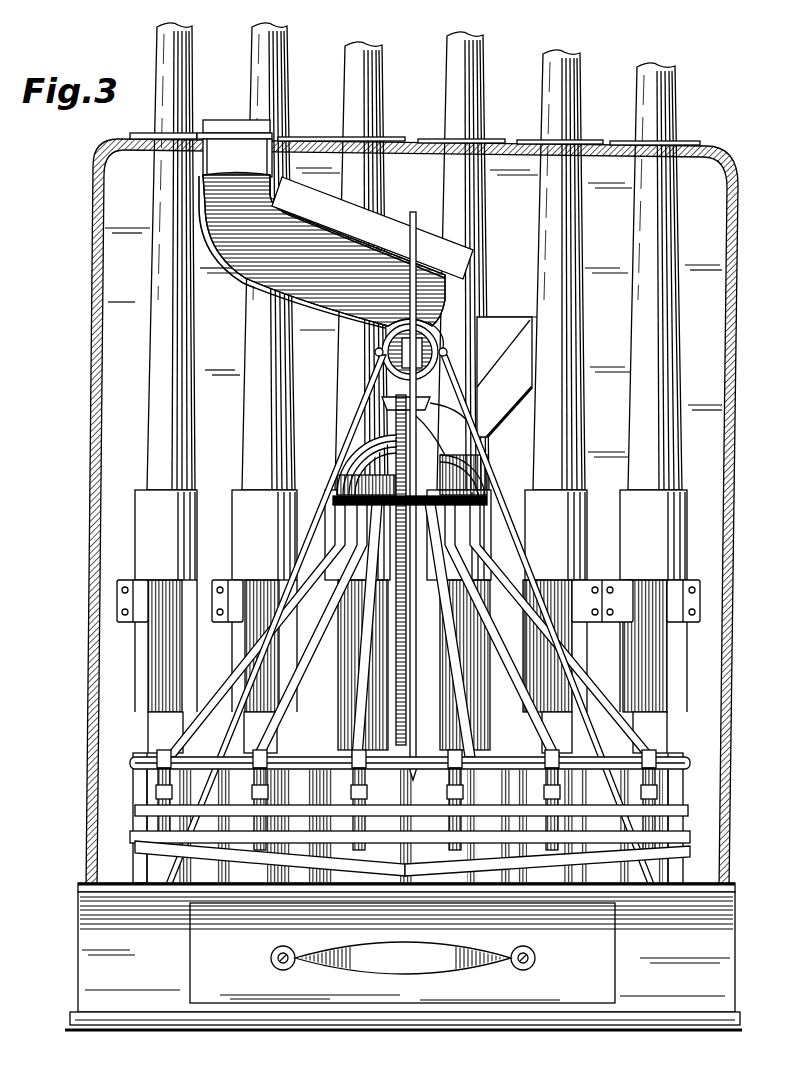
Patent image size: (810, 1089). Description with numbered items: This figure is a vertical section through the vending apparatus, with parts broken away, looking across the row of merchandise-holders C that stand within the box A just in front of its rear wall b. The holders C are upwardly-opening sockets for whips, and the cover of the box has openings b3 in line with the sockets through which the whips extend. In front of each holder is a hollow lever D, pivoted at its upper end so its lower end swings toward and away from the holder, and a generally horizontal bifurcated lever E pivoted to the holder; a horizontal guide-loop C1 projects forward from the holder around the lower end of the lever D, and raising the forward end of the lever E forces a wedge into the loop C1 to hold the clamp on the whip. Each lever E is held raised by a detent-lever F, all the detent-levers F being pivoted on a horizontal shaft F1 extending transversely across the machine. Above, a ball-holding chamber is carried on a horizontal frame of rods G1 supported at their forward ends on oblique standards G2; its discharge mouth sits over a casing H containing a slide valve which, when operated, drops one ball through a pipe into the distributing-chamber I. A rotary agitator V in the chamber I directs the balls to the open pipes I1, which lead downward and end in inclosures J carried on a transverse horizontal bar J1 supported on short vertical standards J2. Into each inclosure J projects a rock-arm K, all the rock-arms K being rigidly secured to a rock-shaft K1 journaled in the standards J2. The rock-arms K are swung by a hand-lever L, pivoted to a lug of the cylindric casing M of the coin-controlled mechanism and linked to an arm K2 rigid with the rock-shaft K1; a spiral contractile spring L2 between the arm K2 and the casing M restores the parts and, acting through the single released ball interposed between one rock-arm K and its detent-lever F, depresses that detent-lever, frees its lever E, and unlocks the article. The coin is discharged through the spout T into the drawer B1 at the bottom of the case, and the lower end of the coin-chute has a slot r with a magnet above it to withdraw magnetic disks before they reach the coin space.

The frame A is at (90, 362).
The rear wall b is at (426, 256).
The openings b3 is at (320, 137).
The merchandise-holders C is at (245, 493).
The guide-loop C1 is at (407, 732).
The lever D is at (262, 624).
The horizontal lever E is at (430, 446).
The detent-lever F is at (412, 858).
The horizontal shaft F1 is at (406, 922).
The drawer B1 is at (418, 960).
The rods G1 is at (375, 352).
The oblique standards G2 is at (343, 447).
The casing H is at (321, 224).
The distributing-chamber I is at (488, 492).
The pipes or passages I1 is at (360, 690).
The inclosures J is at (150, 820).
The transverse horizontal bar J1 is at (292, 818).
The vertical standards J2 is at (128, 845).
The rock-arm K is at (163, 764).
The rock-shaft K1 is at (172, 785).
The arm K2 is at (412, 780).
The hand-lever L is at (359, 239).
The spiral contractile spring L2 is at (392, 434).
The cylindric casing M is at (428, 345).
The slot r is at (441, 318).
The spout or chute T is at (504, 377).
The rotary agitator V is at (372, 218).